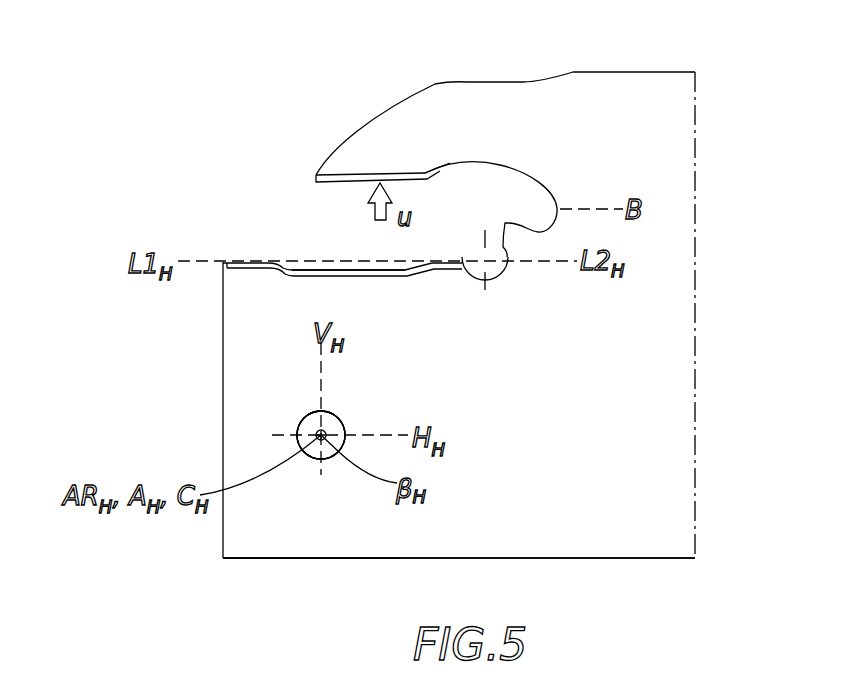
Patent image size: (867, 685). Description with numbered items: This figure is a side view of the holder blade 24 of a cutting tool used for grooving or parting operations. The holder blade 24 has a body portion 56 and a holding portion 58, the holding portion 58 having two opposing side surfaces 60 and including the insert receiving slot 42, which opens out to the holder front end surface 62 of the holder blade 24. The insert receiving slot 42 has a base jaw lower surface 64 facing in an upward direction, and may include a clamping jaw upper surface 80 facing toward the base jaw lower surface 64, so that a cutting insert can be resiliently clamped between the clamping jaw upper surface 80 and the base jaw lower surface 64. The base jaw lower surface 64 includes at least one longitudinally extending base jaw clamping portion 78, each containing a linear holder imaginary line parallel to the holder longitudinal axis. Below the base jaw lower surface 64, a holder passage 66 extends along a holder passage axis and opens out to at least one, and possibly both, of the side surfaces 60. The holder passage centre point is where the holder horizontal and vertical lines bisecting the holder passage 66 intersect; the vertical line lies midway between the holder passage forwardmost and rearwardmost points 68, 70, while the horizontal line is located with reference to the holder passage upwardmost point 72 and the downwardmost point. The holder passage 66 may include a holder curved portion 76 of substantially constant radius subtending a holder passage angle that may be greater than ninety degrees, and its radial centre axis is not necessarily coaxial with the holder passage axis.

The holder blade 24 is at (160, 96).
The insert receiving slot 42 is at (277, 216).
The body portion 56 is at (735, 425).
The holding portion 58 is at (668, 115).
The side surfaces 60 is at (233, 435).
The holder front end surface 62 is at (223, 398).
The base jaw lower surface 64 is at (282, 244).
The holder passage 66 is at (347, 486).
The holder passage forwardmost point 68 is at (298, 433).
The holder passage rearwardmost point 70 is at (345, 433).
The holder passage upwardmost point 72 is at (321, 411).
The holder curved portion 76 is at (328, 458).
The base jaw clamping portion 78 is at (458, 257).
The clamping jaw upper surface 80 is at (326, 191).